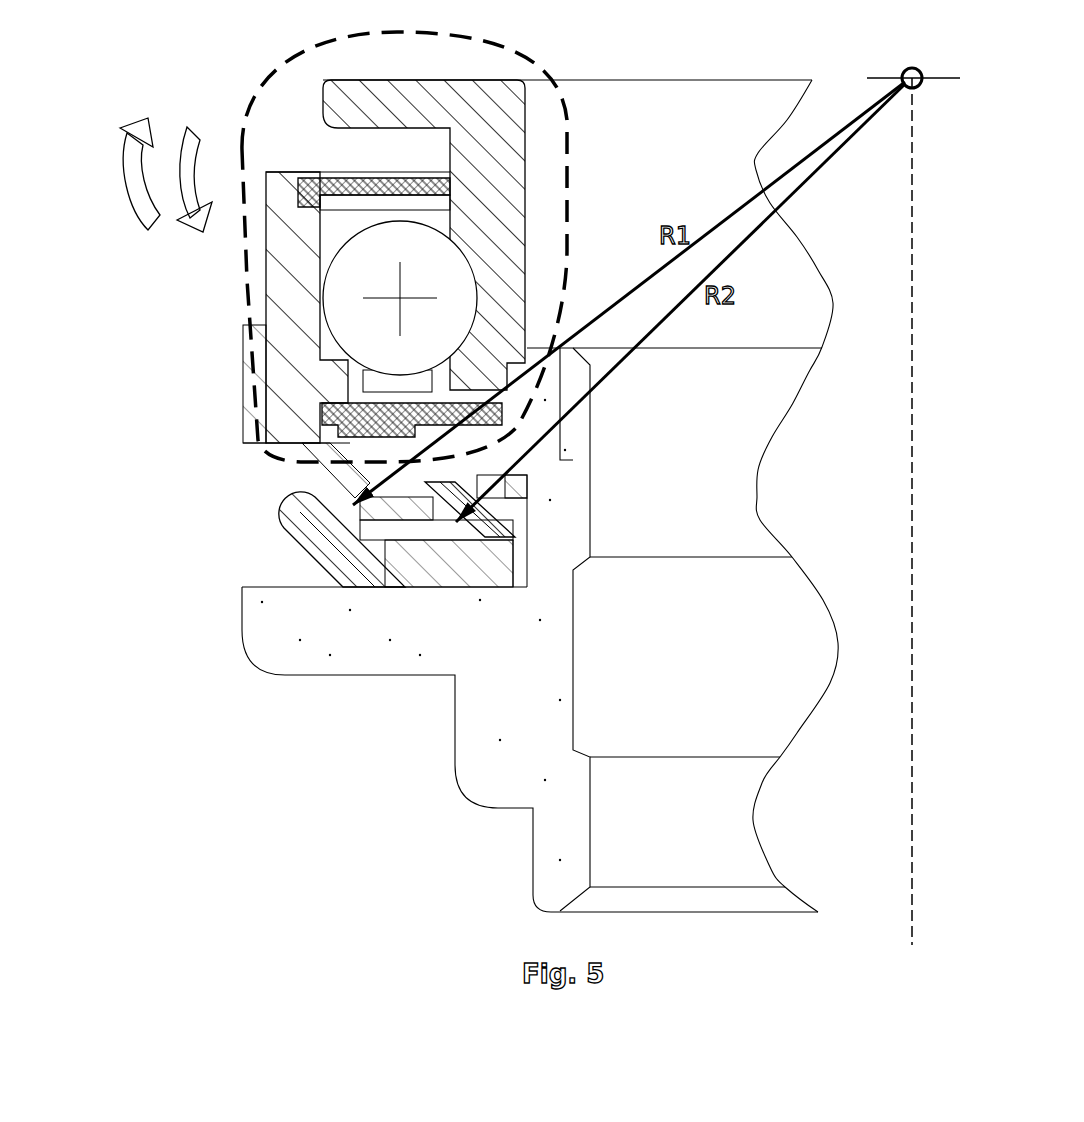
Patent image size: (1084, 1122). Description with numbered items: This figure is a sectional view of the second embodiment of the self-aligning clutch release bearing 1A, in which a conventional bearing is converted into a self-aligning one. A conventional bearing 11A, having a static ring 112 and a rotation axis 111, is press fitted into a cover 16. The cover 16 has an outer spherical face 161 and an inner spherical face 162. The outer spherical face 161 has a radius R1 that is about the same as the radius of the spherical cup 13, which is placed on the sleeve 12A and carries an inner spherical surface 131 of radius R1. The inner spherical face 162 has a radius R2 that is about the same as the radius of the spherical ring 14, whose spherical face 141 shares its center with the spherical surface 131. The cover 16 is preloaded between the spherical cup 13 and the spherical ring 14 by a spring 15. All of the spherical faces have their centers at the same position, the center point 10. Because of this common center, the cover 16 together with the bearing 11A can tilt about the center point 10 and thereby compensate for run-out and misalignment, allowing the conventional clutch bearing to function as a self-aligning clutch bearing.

The second embodiment of self-aligning clutch release bearing 1A is at (210, 690).
The center point of bearing 10 is at (903, 77).
The bearing for second embodiment 11A is at (240, 131).
The rotation axis of bearing 111 is at (911, 791).
The static ring of bearing 112 is at (269, 307).
The sleeve of second embodiment 12A is at (501, 793).
The spherical cup 13 is at (311, 523).
The inner spherical surface 131 is at (360, 530).
The spherical ring 14 is at (494, 528).
The spherical face of spherical ring 141 is at (452, 511).
The spring 15 is at (519, 487).
The cover 16 is at (248, 388).
The outer spherical face 161 is at (330, 482).
The inner spherical face 162 is at (440, 509).